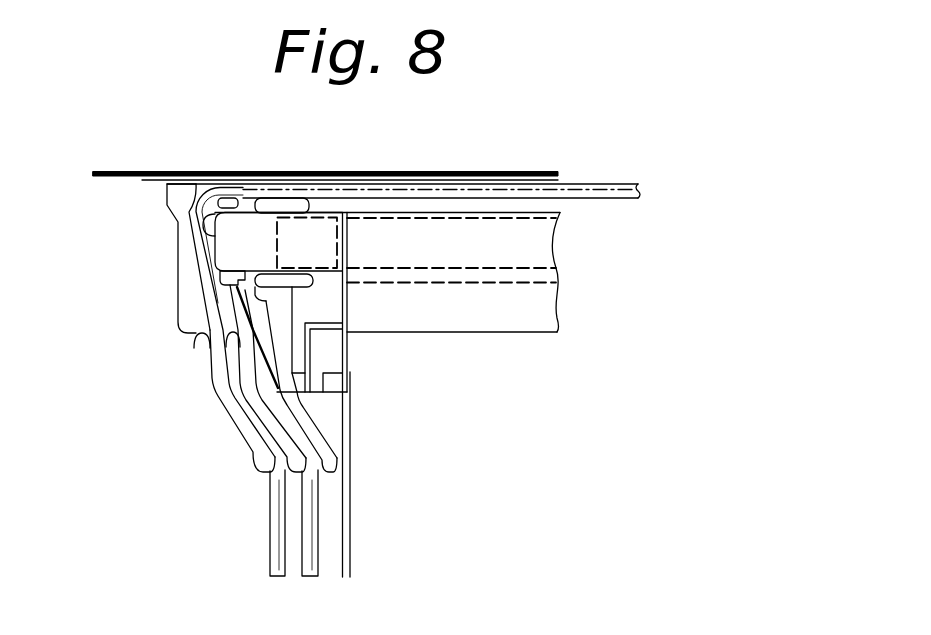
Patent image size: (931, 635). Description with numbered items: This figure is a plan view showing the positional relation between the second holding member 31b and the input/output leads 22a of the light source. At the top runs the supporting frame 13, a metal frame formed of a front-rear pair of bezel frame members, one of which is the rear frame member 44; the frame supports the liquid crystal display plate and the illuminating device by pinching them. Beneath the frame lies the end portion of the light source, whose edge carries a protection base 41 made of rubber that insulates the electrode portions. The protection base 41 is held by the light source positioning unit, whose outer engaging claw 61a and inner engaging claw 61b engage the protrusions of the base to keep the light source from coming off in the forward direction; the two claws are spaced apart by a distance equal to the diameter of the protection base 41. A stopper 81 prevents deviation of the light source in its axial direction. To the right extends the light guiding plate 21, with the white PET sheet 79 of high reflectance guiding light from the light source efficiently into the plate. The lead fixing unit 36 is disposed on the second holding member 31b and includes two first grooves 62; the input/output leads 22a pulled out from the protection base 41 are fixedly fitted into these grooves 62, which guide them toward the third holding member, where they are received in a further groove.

The supporting frame 13 is at (120, 171).
The rear frame member 44 is at (143, 179).
The stopper 81 is at (230, 222).
The protection base 41 is at (243, 228).
The outer engaging claw 61a is at (284, 203).
The inner engaging claw 61b is at (295, 282).
The input/output leads 22a is at (441, 190).
The second holding member 31b is at (158, 238).
The first grooves 62 is at (227, 347).
The white PET sheet 79 is at (513, 318).
The light guiding plate 21 is at (413, 448).
The lead fixing unit 36 is at (188, 512).